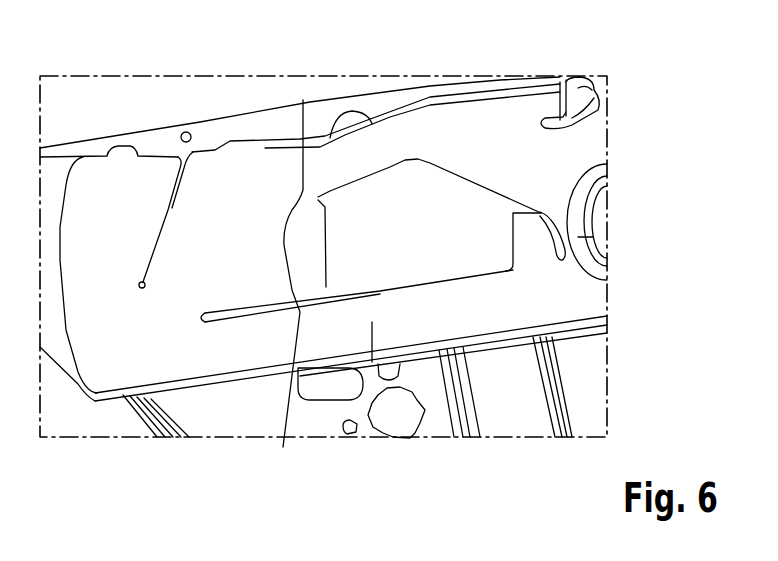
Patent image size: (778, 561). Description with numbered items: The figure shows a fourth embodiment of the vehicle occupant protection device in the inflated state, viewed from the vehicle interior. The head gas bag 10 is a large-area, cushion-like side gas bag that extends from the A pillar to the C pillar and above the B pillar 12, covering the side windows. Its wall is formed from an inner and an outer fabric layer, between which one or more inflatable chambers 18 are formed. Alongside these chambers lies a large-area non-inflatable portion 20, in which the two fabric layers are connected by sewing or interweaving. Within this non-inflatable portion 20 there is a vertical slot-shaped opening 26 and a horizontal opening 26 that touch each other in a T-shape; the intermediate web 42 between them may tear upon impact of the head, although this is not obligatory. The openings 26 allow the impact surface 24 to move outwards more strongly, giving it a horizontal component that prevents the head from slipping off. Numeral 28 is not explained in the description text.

The side gas bag 10 is at (590, 136).
The B pillar 12 is at (517, 412).
The inflatable chamber 18 is at (494, 122).
The non-inflatable portion 20 is at (387, 200).
The impact surface 24 is at (319, 180).
The opening 26 is at (302, 100).
The rib 28 is at (371, 362).
The intermediate web 42 is at (337, 284).